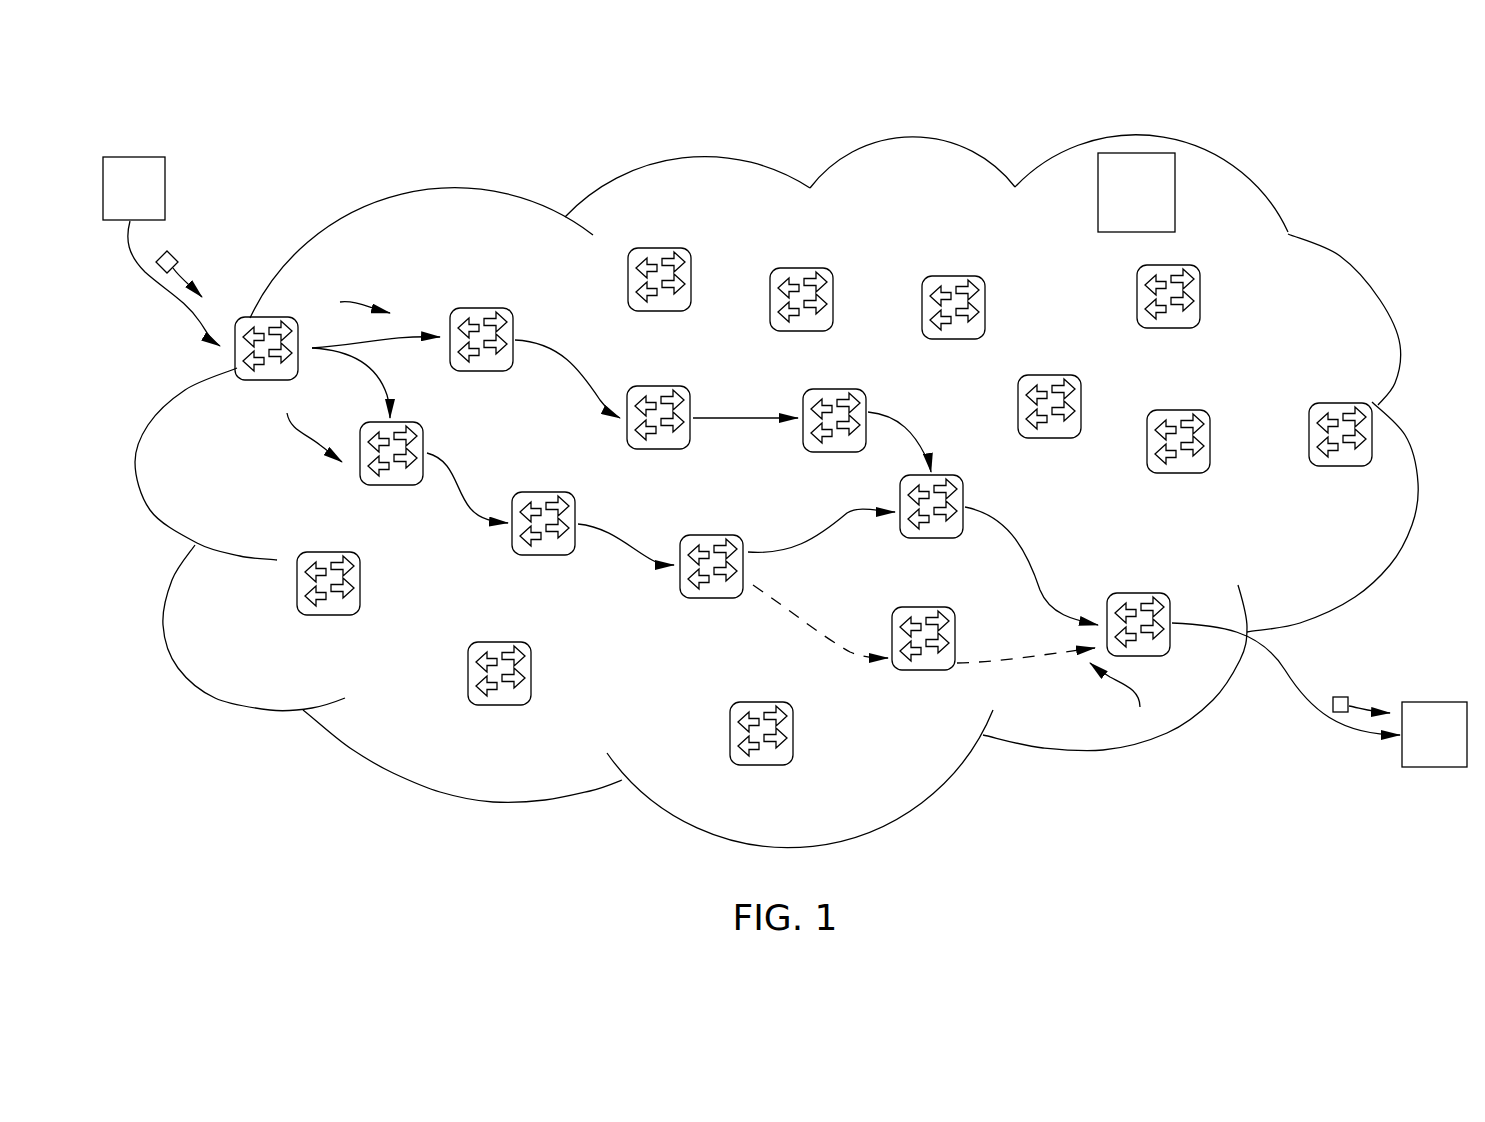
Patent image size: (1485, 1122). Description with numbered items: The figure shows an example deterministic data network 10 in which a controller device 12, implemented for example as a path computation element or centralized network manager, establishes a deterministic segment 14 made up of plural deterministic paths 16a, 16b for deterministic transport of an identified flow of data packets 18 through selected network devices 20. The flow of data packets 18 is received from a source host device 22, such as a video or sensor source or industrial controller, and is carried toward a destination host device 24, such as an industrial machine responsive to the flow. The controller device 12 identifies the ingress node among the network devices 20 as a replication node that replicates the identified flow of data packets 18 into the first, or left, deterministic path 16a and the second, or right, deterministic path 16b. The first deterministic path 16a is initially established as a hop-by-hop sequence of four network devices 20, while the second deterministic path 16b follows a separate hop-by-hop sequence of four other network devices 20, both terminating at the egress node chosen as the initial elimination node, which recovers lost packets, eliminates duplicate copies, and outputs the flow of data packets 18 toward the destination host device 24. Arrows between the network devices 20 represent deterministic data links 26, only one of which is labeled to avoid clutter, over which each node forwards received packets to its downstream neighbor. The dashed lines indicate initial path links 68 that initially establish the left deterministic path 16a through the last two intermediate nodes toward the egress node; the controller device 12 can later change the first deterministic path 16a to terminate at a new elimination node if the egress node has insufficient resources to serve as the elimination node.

The deterministic data network 10 is at (409, 241).
The controller device 12 is at (1172, 152).
The deterministic segment 14 is at (1120, 701).
The first deterministic path 16a is at (309, 423).
The second deterministic path 16b is at (350, 302).
The identified flow of data packets 18 is at (172, 252).
The network device 20 is at (258, 381).
The source host device 22 is at (167, 183).
The destination host device 24 is at (1438, 700).
The deterministic data link 26 is at (734, 423).
The initial path links 68 is at (781, 612).